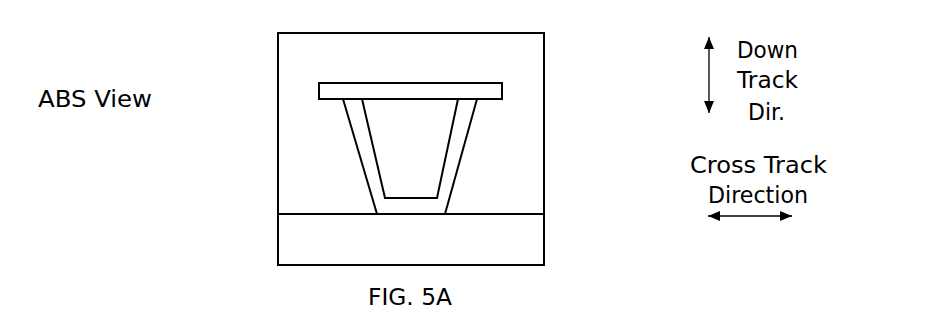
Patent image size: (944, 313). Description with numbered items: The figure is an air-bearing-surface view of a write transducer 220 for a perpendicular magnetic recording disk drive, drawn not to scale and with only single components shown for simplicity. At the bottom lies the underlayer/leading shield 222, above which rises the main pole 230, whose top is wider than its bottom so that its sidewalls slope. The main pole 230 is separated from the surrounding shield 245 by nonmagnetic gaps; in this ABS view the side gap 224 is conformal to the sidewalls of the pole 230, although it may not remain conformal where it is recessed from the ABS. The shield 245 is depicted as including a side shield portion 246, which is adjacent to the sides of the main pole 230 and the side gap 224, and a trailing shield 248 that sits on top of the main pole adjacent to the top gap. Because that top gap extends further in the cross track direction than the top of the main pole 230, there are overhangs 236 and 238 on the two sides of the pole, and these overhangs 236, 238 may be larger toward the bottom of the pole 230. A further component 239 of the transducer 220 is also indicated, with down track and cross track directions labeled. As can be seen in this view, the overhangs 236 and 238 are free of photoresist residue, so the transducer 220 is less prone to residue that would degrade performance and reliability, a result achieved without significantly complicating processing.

The write transducer 220 is at (182, 26).
The underlayer/leading shield 222 is at (411, 233).
The side gap 224 is at (368, 187).
The main pole 230 is at (410, 148).
The overhang 236 is at (335, 113).
The overhang 238 is at (485, 118).
The component of the transducer 239 is at (502, 90).
The shield 245 is at (410, 75).
The side shield portion 246 is at (558, 148).
The trailing shield 248 is at (268, 49).